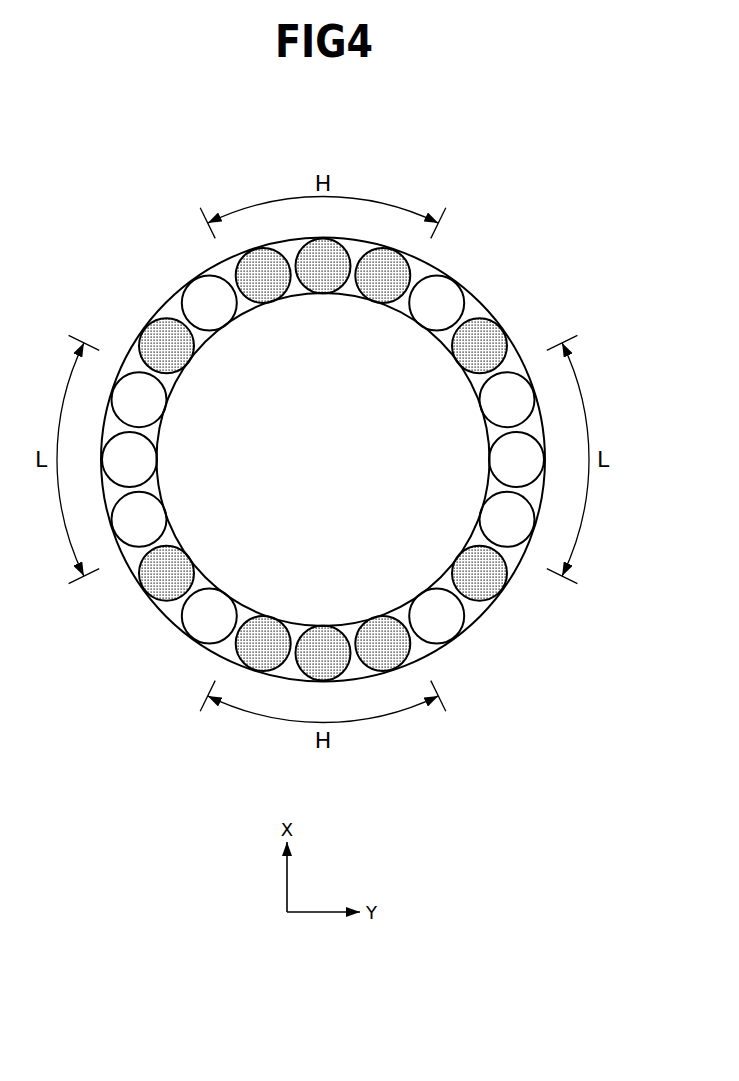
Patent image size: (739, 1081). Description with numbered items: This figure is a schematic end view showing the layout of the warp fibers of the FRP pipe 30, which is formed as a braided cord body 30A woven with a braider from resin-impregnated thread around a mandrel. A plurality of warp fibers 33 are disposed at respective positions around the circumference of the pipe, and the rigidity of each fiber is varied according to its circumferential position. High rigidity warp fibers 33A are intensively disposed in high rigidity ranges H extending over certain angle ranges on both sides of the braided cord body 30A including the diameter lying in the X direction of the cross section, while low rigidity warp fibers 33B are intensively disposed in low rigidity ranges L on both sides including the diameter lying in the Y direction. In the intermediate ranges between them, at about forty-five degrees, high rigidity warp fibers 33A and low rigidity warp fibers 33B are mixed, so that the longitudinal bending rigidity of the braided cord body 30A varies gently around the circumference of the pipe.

The FRP pipe 30 is at (300, 460).
The braided cord body 30A is at (178, 291).
The warp fibers 33 is at (323, 460).
The high rigidity warp fibers 33A is at (333, 286).
The low rigidity warp fibers 33B is at (134, 458).